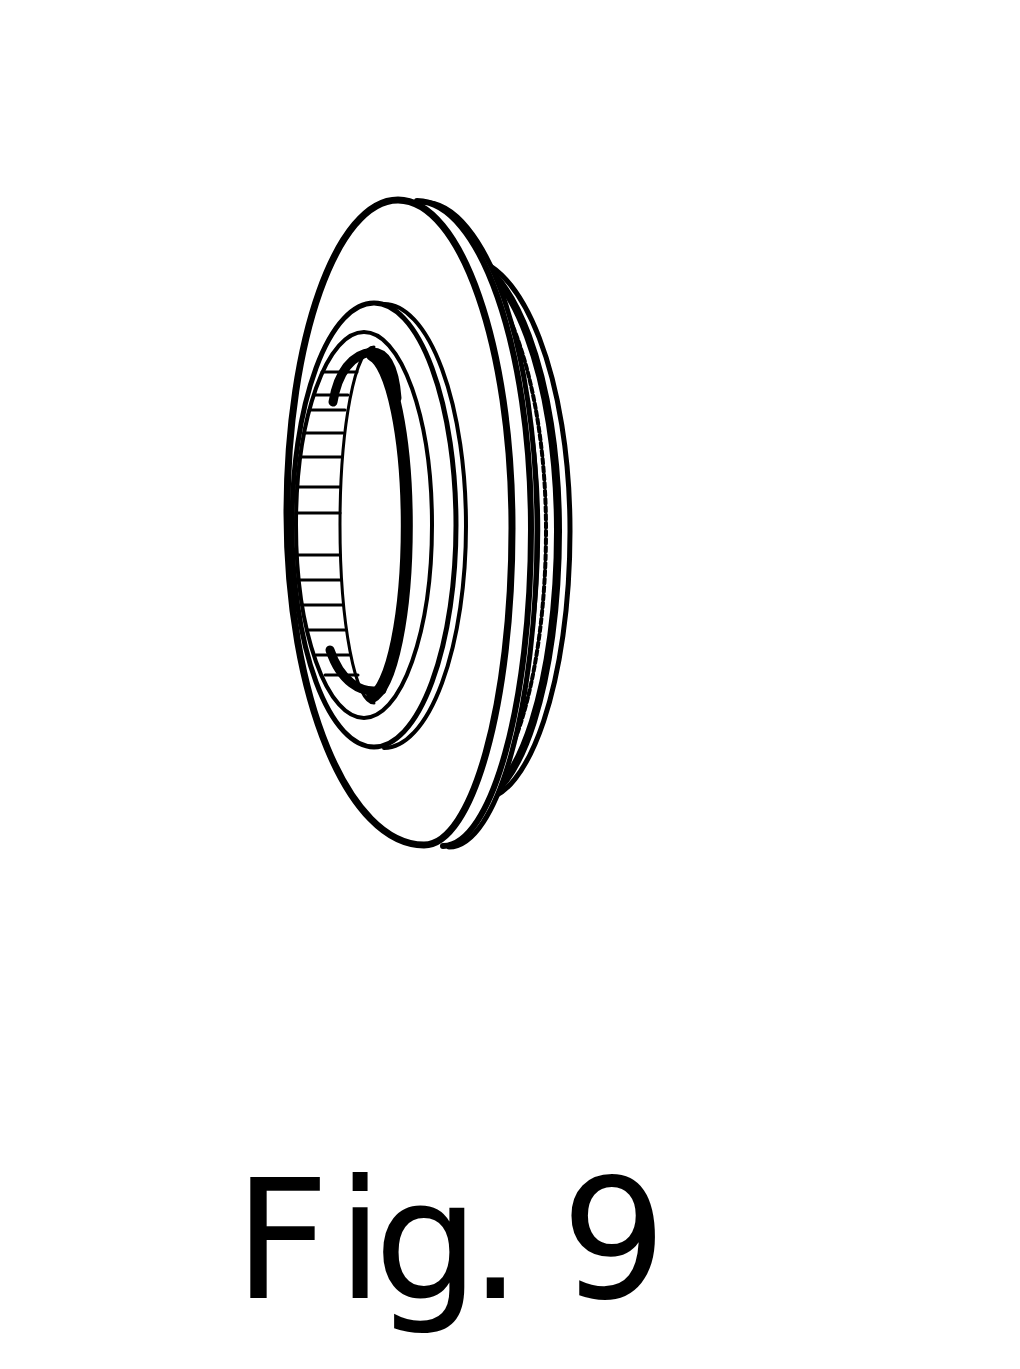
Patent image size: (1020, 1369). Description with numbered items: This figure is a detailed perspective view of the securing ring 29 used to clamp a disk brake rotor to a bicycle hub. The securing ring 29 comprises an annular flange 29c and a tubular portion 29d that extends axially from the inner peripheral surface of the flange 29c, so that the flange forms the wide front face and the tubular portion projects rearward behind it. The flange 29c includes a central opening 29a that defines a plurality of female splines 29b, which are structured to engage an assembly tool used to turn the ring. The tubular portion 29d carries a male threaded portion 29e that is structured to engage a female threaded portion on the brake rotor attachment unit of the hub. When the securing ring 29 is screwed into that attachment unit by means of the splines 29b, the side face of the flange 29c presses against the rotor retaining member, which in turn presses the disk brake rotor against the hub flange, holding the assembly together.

The securing ring 29 is at (433, 439).
The central opening 29a is at (368, 512).
The female splines 29b is at (285, 538).
The annular flange 29c is at (487, 793).
The tubular portion 29d is at (572, 548).
The male threaded portion 29e is at (555, 397).